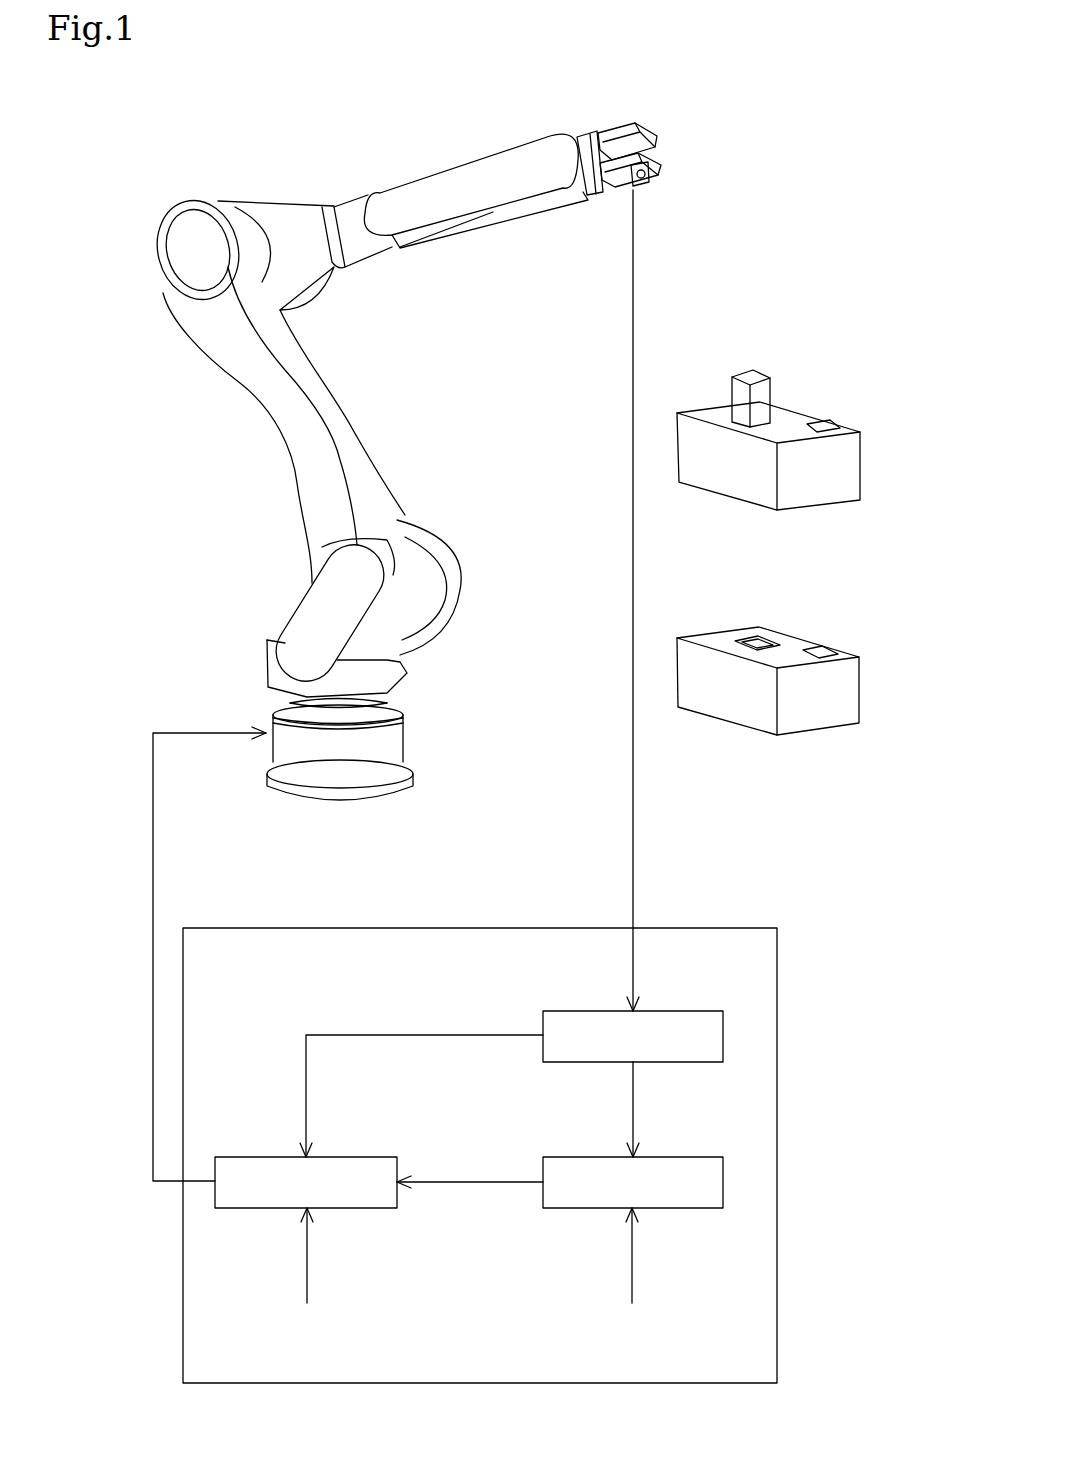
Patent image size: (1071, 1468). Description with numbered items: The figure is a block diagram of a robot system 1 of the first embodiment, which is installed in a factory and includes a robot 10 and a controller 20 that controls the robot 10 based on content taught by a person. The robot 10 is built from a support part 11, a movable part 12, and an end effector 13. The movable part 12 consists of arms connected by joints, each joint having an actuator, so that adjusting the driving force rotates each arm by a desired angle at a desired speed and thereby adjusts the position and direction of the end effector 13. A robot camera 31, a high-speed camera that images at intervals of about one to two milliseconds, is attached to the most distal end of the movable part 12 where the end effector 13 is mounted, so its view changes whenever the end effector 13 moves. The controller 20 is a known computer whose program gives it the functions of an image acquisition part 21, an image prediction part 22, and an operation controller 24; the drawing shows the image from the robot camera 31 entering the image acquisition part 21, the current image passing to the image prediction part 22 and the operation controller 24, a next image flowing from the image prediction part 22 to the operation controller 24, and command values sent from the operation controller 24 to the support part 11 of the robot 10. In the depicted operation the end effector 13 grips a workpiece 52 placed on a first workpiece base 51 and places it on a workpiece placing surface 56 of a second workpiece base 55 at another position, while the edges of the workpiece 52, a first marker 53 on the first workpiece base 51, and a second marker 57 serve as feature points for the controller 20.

The robot system 1 is at (898, 172).
The robot 10 is at (175, 167).
The support part 11 is at (413, 745).
The movable part 12 is at (360, 333).
The end effector 13 is at (643, 123).
The robot camera 31 is at (635, 188).
The controller 20 is at (455, 928).
The image acquisition part 21 is at (717, 1035).
The image prediction part 22 is at (717, 1182).
The operation controller 24 is at (208, 1197).
The first workpiece base 51 is at (783, 413).
The workpiece 52 is at (742, 373).
The first marker 53 is at (812, 422).
The second workpiece base 55 is at (790, 647).
The workpiece placing surface 56 is at (748, 643).
The second marker 57 is at (810, 650).